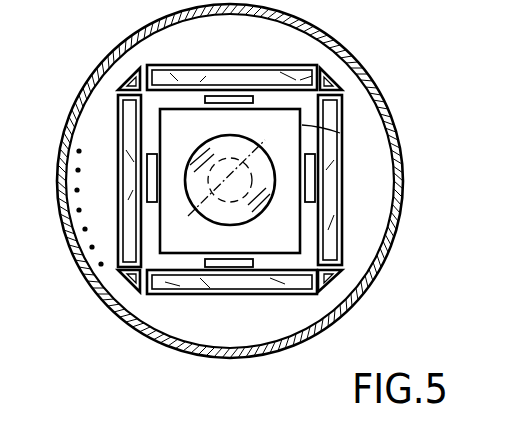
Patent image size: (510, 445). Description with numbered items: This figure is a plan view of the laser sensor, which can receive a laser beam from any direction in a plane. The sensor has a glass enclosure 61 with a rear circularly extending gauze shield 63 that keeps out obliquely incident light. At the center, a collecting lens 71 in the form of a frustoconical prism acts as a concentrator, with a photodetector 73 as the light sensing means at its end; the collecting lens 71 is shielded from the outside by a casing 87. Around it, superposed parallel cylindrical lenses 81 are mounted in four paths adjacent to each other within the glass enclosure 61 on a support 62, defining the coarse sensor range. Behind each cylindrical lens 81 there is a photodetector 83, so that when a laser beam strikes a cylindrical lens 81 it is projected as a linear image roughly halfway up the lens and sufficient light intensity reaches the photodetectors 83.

The glass enclosure 61 is at (111, 312).
The support 62 is at (132, 77).
The gauze shield 63 is at (78, 210).
The collecting lens 71 is at (256, 214).
The photodetector 73 is at (252, 148).
The cylindrical lens 81 is at (127, 120).
The photodetector 83 is at (240, 95).
The casing 87 is at (332, 133).